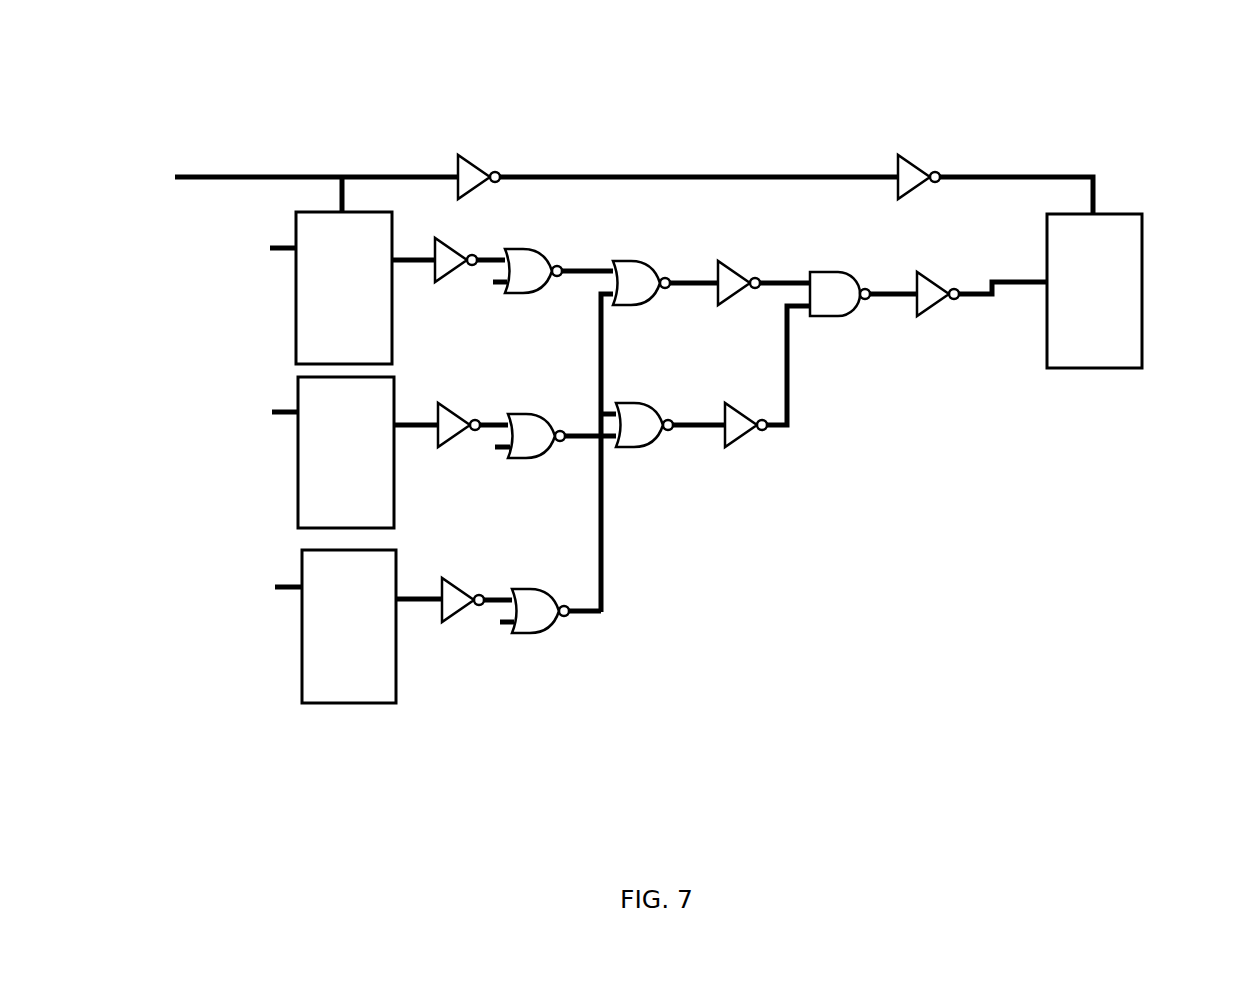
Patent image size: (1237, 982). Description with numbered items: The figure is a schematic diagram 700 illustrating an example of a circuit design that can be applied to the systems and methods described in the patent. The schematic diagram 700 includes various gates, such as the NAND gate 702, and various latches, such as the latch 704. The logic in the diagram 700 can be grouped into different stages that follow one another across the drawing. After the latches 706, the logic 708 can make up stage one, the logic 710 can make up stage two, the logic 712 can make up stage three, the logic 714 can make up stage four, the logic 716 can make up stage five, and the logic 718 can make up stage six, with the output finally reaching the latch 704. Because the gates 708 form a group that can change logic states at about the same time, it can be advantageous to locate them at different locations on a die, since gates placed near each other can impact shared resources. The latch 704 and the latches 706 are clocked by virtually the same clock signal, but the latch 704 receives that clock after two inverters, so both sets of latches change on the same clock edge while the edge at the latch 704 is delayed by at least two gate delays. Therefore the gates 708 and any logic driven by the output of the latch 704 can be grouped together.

The schematic diagram 700 is at (675, 421).
The NAND gate 702 is at (840, 270).
The latch 704 is at (1117, 214).
The latches 706 is at (347, 745).
The logic 708 is at (456, 745).
The logic 710 is at (536, 745).
The logic 712 is at (644, 745).
The logic 714 is at (733, 745).
The logic 716 is at (879, 512).
The logic 718 is at (922, 745).